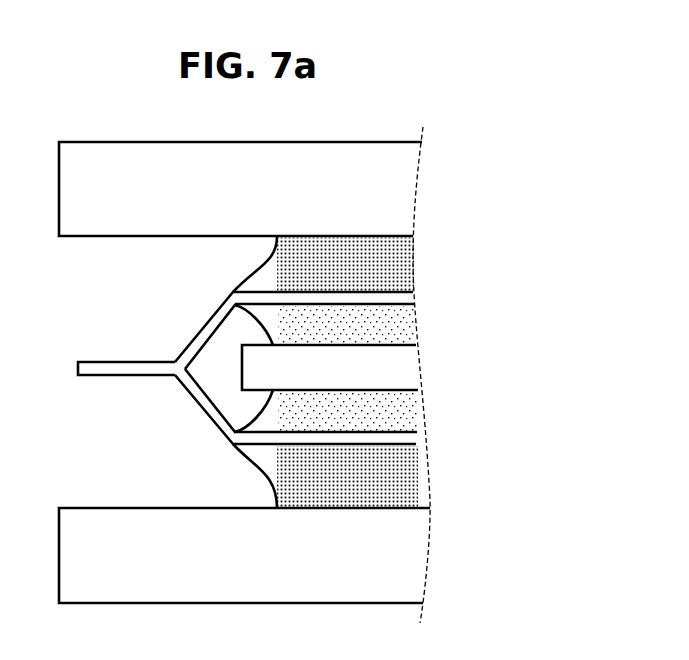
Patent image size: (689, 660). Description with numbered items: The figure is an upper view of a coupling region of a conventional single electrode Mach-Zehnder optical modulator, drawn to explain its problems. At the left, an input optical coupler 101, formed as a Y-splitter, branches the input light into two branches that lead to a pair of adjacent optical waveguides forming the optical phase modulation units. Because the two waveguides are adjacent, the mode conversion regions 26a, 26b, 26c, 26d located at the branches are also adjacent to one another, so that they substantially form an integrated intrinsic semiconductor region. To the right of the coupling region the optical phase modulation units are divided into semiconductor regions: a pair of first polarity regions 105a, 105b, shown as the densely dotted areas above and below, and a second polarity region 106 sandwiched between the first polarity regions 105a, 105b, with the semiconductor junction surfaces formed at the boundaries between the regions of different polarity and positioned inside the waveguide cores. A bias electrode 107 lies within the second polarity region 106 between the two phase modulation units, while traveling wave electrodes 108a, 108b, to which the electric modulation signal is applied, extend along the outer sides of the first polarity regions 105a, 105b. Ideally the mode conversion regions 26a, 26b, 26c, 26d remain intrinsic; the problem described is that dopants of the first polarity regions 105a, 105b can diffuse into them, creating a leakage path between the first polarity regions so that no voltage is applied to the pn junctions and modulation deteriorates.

The input optical coupler 101 is at (170, 360).
The mode conversion region 26a is at (262, 272).
The mode conversion region 26b is at (260, 316).
The mode conversion region 26c is at (273, 404).
The mode conversion region 26d is at (262, 460).
The first polarity region 105a is at (413, 265).
The first polarity region 105b is at (412, 488).
The second polarity region 106 is at (414, 327).
The bias electrode 107 is at (412, 367).
The traveling wave electrode 108a is at (412, 178).
The traveling wave electrode 108b is at (410, 557).